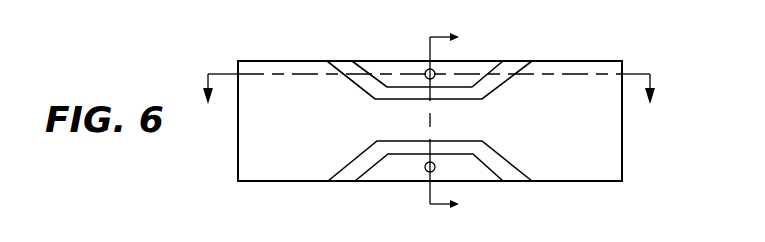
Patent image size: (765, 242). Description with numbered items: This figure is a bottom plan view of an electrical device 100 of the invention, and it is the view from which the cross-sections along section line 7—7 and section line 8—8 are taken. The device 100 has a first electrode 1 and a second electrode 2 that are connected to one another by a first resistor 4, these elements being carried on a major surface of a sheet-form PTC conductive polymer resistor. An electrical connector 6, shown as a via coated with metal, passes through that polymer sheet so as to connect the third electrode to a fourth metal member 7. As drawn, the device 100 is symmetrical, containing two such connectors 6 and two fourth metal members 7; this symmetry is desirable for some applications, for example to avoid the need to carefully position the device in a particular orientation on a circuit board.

The electrical device 100 is at (580, 40).
The first electrode 1 is at (284, 135).
The second electrode 2 is at (596, 131).
The first resistor 4 is at (473, 133).
The electrical connector 6 is at (425, 69).
The fourth metal member 7 is at (508, 12).
The section line 8- 8 is at (454, 122).